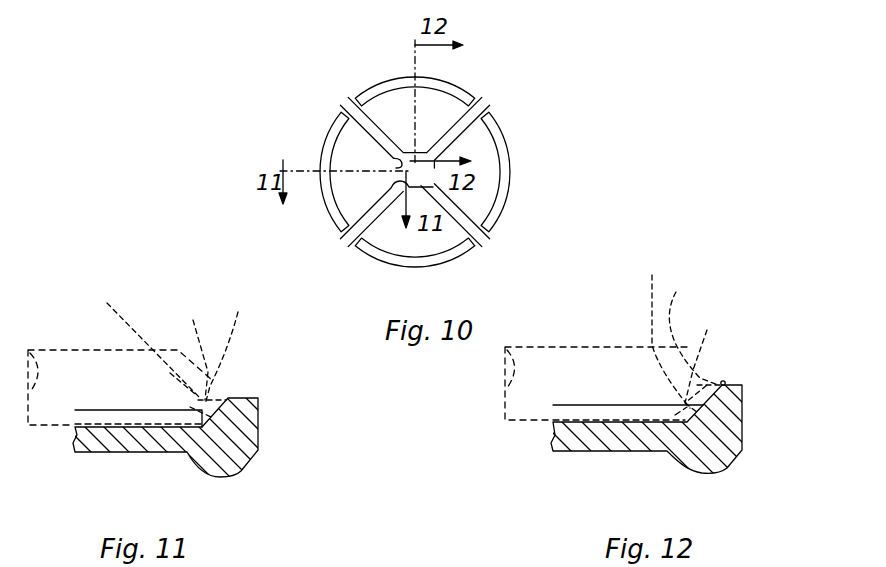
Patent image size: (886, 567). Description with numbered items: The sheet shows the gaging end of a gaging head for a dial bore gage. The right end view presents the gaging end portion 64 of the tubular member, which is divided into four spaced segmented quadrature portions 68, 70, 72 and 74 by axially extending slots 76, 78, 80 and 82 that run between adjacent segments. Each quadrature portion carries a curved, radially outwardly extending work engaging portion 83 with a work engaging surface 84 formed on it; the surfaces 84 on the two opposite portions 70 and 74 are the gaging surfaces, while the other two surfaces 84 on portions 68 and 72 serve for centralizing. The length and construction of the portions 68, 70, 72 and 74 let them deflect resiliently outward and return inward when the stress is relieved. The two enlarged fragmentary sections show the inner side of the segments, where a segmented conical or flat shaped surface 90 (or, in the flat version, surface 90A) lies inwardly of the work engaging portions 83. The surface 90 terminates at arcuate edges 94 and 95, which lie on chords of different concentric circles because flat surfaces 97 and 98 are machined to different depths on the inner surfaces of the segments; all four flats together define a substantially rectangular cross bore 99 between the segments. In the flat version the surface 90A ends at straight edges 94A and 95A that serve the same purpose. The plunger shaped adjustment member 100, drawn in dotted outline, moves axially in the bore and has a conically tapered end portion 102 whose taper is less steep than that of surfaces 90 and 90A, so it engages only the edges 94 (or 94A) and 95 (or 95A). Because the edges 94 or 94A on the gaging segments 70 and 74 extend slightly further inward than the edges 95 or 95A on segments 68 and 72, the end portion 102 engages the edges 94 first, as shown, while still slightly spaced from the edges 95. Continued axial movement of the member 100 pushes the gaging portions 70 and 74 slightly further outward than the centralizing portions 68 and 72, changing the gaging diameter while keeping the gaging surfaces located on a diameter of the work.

In FIG. 10, the gaging end portion 64 is at (552, 120).
In FIG. 10, the quadrature portion 68 is at (353, 138).
In FIG. 11, the quadrature portion 68 is at (130, 440).
In FIG. 10, the quadrature portion 70 is at (395, 108).
In FIG. 12, the quadrature portion 70 is at (618, 437).
In FIG. 10, the quadrature portion 72 is at (487, 174).
In FIG. 10, the quadrature portion 74 is at (400, 238).
In FIG. 10, the slot 76 is at (358, 105).
In FIG. 10, the slot 78 is at (470, 110).
In FIG. 10, the slot 80 is at (487, 236).
In FIG. 10, the slot 82 is at (350, 236).
In FIG. 11, the work engaging portion 83 is at (245, 442).
In FIG. 12, the work engaging portion 83 is at (735, 450).
In FIG. 10, the work engaging surface 84 is at (500, 122).
In FIG. 11, the work engaging surface 84 is at (221, 477).
In FIG. 12, the work engaging surface 84 is at (700, 474).
In FIG. 11, the segmented conical or flat shaped surface 90 is at (200, 410).
In FIG. 12, the segmented conical or flat shaped surface 90 is at (690, 405).
In FIG. 12, the edge 94 is at (724, 381).
In FIG. 11, the edge 95 is at (243, 387).
In FIG. 10, the flat surface 97 is at (396, 208).
In FIG. 12, the flat surface 97 is at (742, 385).
In FIG. 10, the flat surface 98 is at (392, 153).
In FIG. 11, the flat surface 98 is at (248, 398).
In FIG. 10, the cross bore 99 is at (430, 192).
In FIG. 11, the adjustment member 100 is at (80, 350).
In FIG. 12, the adjustment member 100 is at (602, 345).
In FIG. 11, the conically tapered end portion 102 is at (192, 363).
In FIG. 12, the conically tapered end portion 102 is at (708, 361).
In FIG. 11, the segmented flat shaped surface 90A is at (241, 348).
In FIG. 12, the segmented flat shaped surface 90A is at (695, 333).
In FIG. 12, the edge 94A is at (660, 331).
In FIG. 11, the edge 95A is at (147, 343).